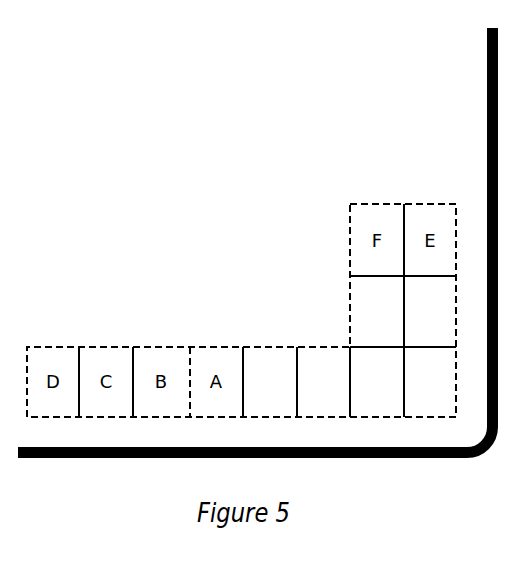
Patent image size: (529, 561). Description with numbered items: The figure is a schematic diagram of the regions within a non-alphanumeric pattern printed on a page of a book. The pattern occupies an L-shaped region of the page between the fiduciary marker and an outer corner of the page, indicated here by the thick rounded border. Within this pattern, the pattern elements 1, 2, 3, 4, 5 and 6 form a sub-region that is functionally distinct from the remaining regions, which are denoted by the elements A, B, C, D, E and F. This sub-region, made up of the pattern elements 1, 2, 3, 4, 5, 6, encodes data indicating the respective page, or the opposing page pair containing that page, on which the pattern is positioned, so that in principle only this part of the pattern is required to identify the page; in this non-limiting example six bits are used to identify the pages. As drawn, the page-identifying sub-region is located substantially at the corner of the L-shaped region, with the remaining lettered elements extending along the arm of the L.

The pattern element 1 is at (430, 311).
The pattern element 2 is at (377, 311).
The pattern element 3 is at (430, 382).
The pattern element 4 is at (377, 382).
The pattern element 5 is at (323, 382).
The pattern element 6 is at (270, 382).